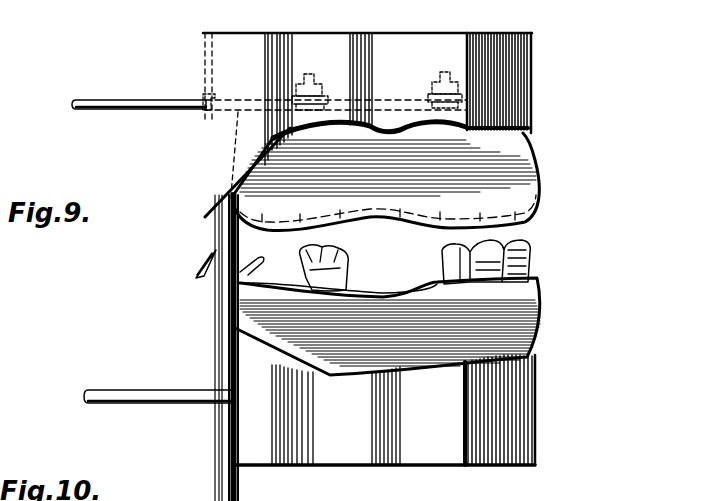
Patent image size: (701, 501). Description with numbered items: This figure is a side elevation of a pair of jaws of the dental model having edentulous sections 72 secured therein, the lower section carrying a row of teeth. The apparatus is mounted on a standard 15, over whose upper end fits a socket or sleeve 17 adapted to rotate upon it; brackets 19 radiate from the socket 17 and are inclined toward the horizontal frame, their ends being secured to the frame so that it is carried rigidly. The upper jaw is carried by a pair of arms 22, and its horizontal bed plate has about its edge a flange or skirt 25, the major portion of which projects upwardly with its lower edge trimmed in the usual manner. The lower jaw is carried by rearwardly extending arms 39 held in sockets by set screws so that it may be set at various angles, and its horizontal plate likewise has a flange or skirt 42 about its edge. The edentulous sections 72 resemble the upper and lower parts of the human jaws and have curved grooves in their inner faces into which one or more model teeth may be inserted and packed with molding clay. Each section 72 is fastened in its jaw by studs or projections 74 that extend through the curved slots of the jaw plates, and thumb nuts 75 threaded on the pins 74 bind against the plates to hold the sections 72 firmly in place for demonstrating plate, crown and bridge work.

The standard 15 is at (240, 490).
The socket or sleeve 17 is at (240, 246).
The brackets 19 is at (245, 268).
The arms 22 is at (163, 102).
The flange or skirt 25 is at (367, 114).
The arms 39 is at (138, 392).
The flange or skirt 42 is at (403, 410).
The edentulous sections 72 is at (532, 159).
The studs or projections 74 is at (316, 82).
The thumb nuts 75 is at (292, 96).